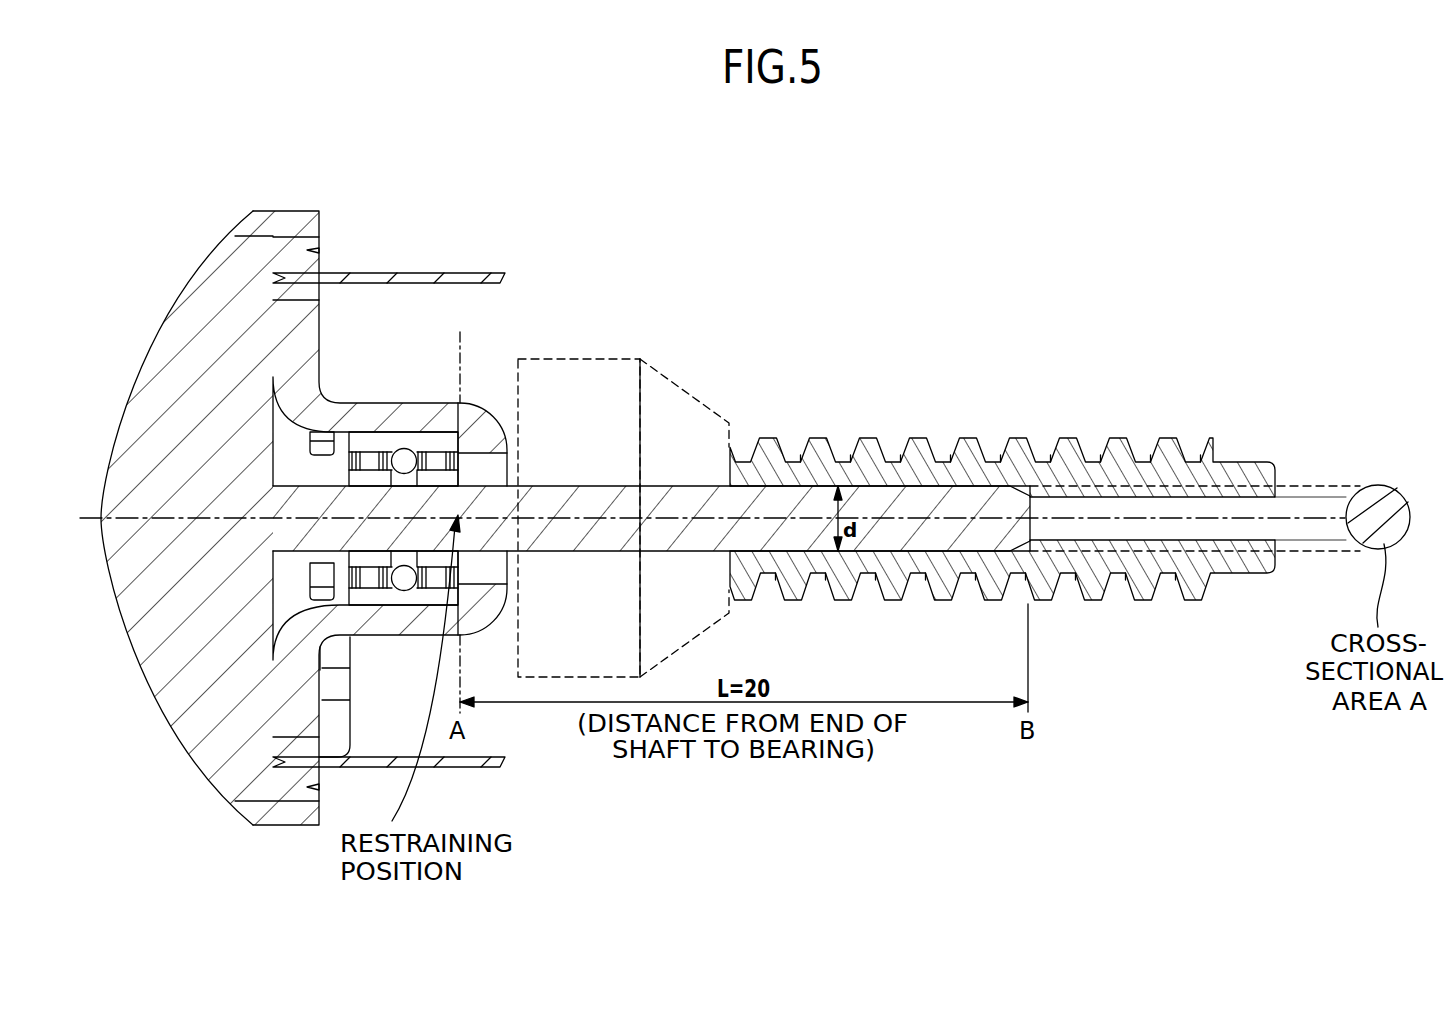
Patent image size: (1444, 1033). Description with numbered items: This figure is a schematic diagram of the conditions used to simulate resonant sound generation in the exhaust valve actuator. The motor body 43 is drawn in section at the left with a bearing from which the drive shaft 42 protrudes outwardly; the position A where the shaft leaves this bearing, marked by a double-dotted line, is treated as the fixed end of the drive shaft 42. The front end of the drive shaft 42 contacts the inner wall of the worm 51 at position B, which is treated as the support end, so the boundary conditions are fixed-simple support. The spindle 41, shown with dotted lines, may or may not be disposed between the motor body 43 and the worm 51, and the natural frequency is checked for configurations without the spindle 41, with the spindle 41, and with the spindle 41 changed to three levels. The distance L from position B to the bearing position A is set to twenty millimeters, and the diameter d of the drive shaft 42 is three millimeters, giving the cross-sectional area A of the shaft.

The motor body 43 is at (321, 236).
The spindle 41 is at (607, 359).
The drive shaft 42 is at (888, 503).
The worm 51 is at (1163, 428).